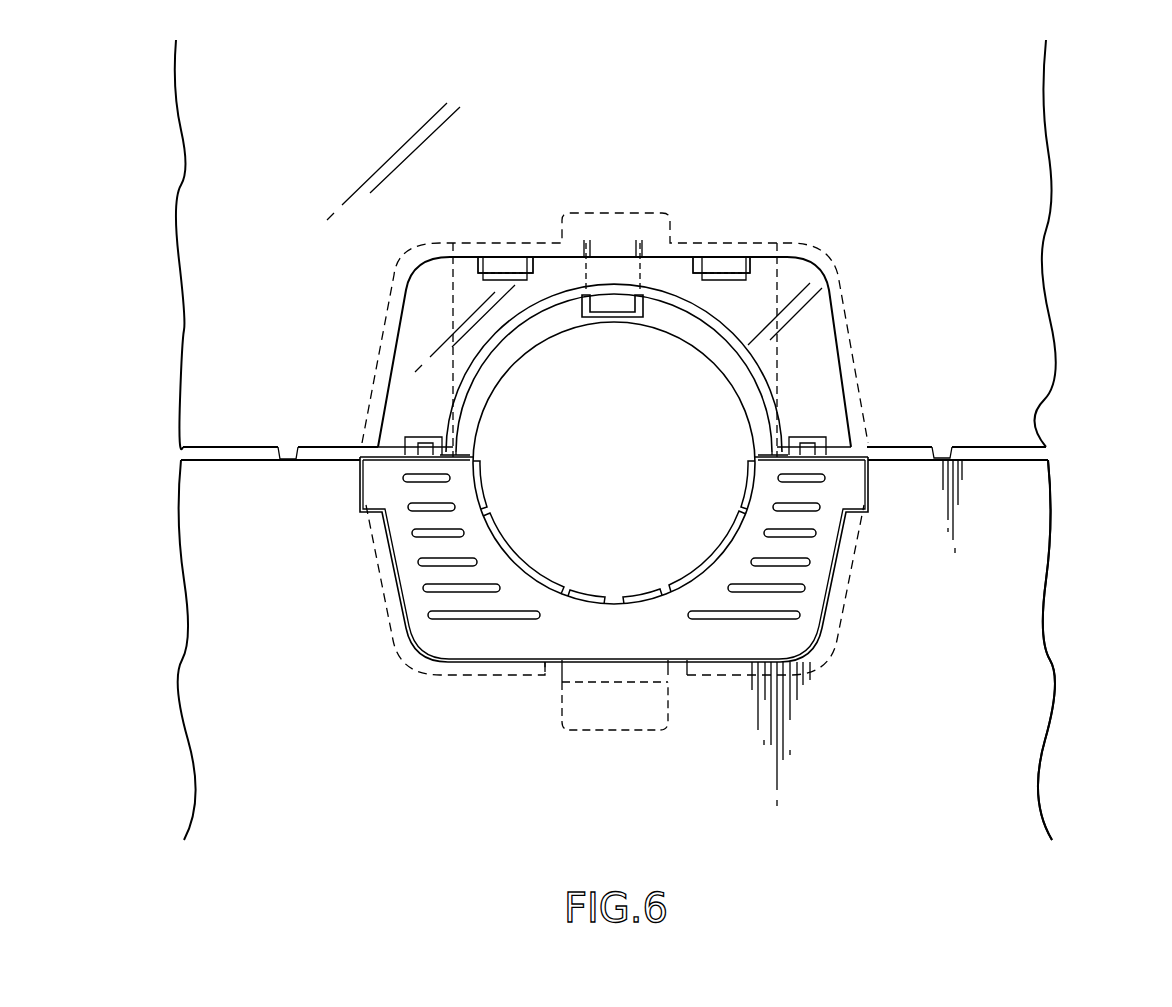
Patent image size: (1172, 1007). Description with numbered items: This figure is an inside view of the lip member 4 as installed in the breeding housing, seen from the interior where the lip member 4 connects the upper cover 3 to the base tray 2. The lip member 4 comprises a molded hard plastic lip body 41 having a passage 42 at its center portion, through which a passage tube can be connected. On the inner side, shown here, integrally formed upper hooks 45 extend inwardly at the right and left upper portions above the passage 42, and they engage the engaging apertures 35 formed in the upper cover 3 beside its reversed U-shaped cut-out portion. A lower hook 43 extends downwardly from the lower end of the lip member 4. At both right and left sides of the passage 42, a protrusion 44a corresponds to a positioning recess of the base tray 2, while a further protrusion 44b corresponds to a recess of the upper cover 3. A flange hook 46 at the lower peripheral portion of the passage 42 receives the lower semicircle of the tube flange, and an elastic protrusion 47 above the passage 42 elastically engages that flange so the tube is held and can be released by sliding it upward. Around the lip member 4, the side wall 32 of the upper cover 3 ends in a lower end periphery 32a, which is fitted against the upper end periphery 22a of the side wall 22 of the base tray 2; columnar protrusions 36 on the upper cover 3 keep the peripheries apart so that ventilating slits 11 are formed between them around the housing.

The base tray 2 is at (859, 797).
The upper cover 3 is at (847, 132).
The lip member 4 is at (668, 331).
The lip body 41 is at (848, 257).
The passage 42 is at (641, 474).
The lower hook 43 is at (633, 718).
The protrusion 44a is at (373, 492).
The protrusion 44b is at (420, 447).
The upper hook 45 is at (508, 266).
The flange hook 46 is at (753, 477).
The elastic protrusion 47 is at (612, 300).
The engaging aperture 35 is at (478, 260).
The protrusion 36 is at (288, 449).
The ventilating slit 11 is at (905, 452).
The side wall 22 is at (1000, 620).
The upper end periphery 22a is at (987, 465).
The side wall 32 is at (1050, 240).
The lower end periphery 32a is at (993, 432).